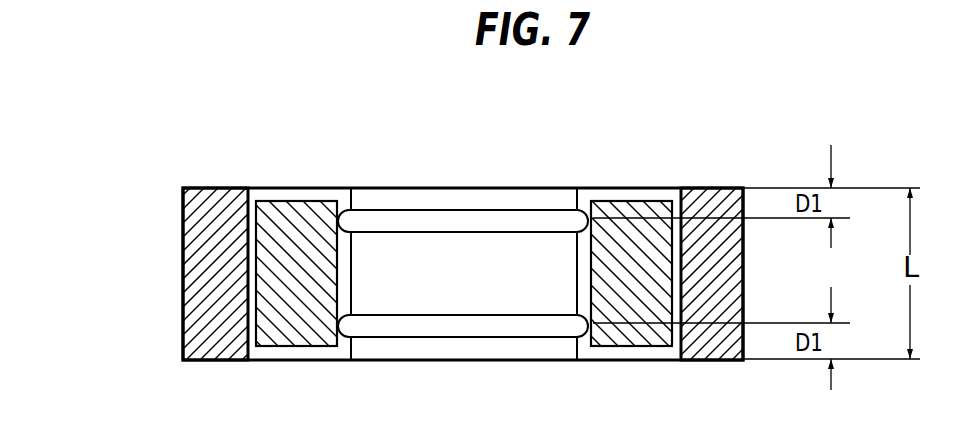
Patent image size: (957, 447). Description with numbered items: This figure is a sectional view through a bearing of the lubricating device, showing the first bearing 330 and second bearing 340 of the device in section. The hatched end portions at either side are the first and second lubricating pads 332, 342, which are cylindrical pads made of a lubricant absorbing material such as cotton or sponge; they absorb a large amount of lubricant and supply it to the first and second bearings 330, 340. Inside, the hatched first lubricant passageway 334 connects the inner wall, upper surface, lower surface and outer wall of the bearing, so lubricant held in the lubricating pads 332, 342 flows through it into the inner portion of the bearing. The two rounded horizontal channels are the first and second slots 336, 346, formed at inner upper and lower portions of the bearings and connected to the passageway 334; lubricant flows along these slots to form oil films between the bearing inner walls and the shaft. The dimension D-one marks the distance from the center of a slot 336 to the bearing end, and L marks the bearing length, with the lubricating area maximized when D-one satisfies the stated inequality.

The first bearing 330 is at (622, 166).
The second bearing 340 is at (472, 236).
The first lubricating pad 332 is at (204, 197).
The second lubricating pad 342 is at (456, 237).
The first lubricant passageway 334 is at (262, 272).
The first slot 336 is at (424, 212).
The second slot 346 is at (463, 226).